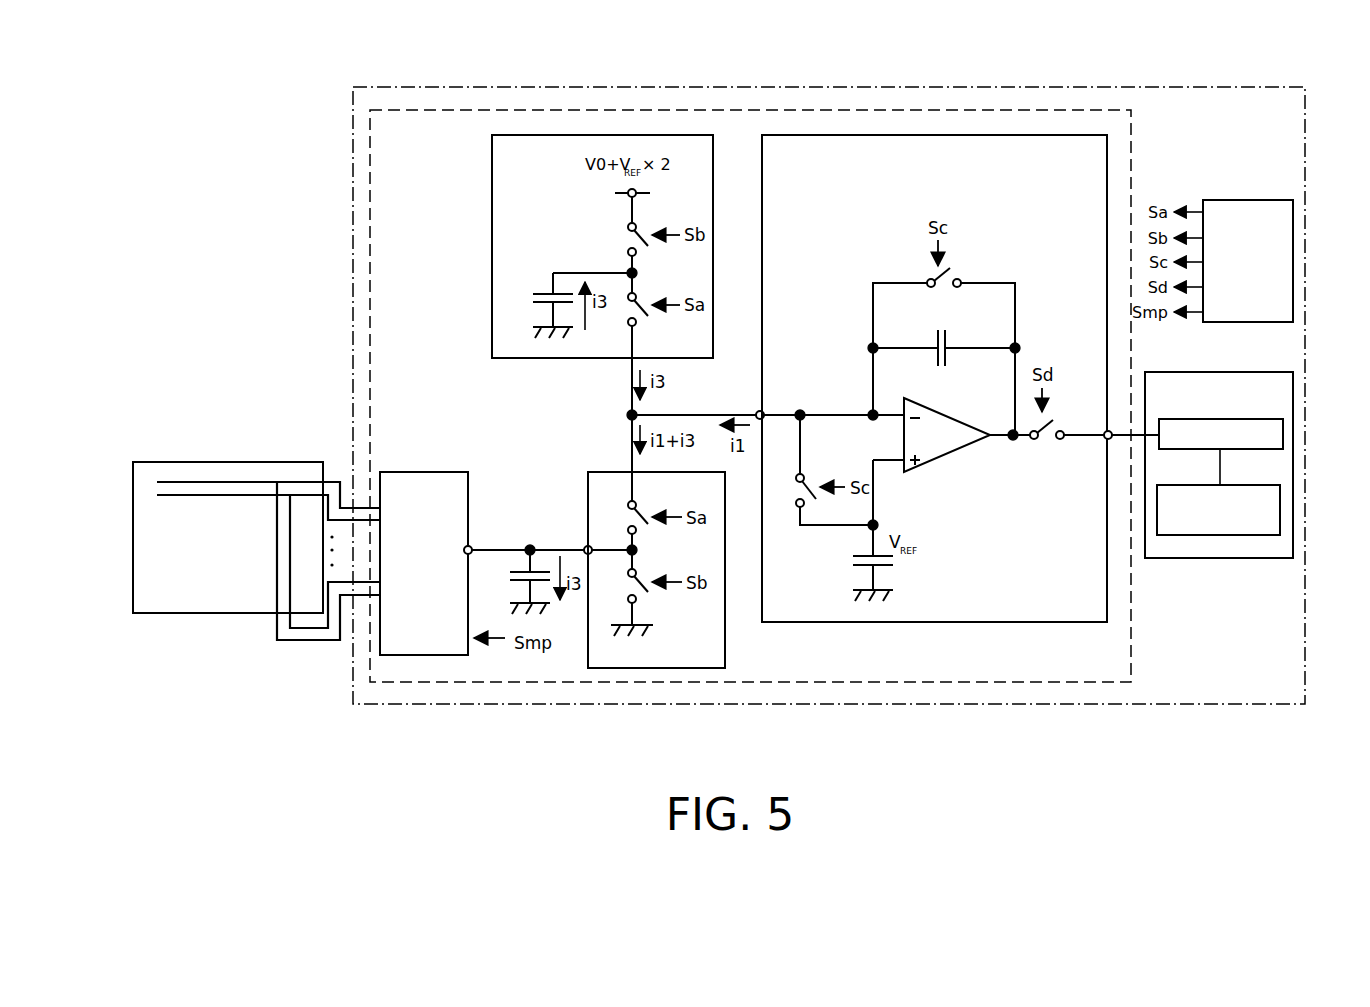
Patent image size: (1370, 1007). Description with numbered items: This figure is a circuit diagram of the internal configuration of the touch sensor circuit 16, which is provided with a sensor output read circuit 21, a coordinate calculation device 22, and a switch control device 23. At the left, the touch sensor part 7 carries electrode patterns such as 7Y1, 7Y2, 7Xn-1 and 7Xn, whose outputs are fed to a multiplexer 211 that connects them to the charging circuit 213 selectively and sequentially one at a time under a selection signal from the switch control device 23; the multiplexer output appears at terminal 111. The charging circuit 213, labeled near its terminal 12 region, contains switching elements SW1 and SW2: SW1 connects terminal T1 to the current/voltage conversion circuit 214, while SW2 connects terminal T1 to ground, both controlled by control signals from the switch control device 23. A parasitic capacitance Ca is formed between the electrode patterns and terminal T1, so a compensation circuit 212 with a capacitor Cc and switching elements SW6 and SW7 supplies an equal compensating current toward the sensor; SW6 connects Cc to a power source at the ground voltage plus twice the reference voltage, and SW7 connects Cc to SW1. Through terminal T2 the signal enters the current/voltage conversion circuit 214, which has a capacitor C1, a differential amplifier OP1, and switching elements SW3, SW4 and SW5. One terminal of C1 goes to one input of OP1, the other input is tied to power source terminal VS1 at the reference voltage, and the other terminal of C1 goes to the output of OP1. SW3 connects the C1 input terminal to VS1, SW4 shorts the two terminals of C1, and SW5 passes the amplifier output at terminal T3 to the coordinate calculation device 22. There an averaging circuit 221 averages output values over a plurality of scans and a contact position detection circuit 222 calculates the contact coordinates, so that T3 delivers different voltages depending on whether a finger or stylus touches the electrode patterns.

The touch sensor circuit 16 is at (1148, 87).
The sensor output read circuit 21 is at (1103, 110).
The touch sensor part 7 is at (218, 462).
The electrode pattern 7Y1 is at (182, 482).
The electrode pattern 7Y2 is at (183, 495).
The electrode pattern 7Xn-1 is at (277, 482).
The electrode pattern 7Xn is at (290, 495).
The multiplexer 211 is at (425, 472).
The terminal 111 is at (473, 548).
The charging circuit terminal 12 is at (588, 490).
The compensation circuit 212 is at (545, 135).
The charging circuit 213 is at (612, 670).
The current/voltage conversion circuit 214 is at (826, 135).
The coordinate calculation device 22 is at (1250, 372).
The averaging circuit 221 is at (1243, 419).
The contact position detection circuit 222 is at (1243, 485).
The switch control device 23 is at (1262, 200).
The terminal T1 is at (584, 548).
The terminal T2 is at (757, 412).
The terminal T3 is at (1111, 440).
The switching element SW1 is at (646, 508).
The switching element SW2 is at (646, 572).
The switching element SW3 is at (810, 472).
The switching element SW4 is at (962, 275).
The switching element SW5 is at (1062, 424).
The switching element SW6 is at (645, 222).
The switching element SW7 is at (645, 295).
The capacitor C1 is at (941, 330).
The parasitic capacitance Ca is at (512, 580).
The capacitor Cc is at (530, 290).
The differential amplifier OP1 is at (940, 460).
The power source terminal VS1 is at (893, 566).